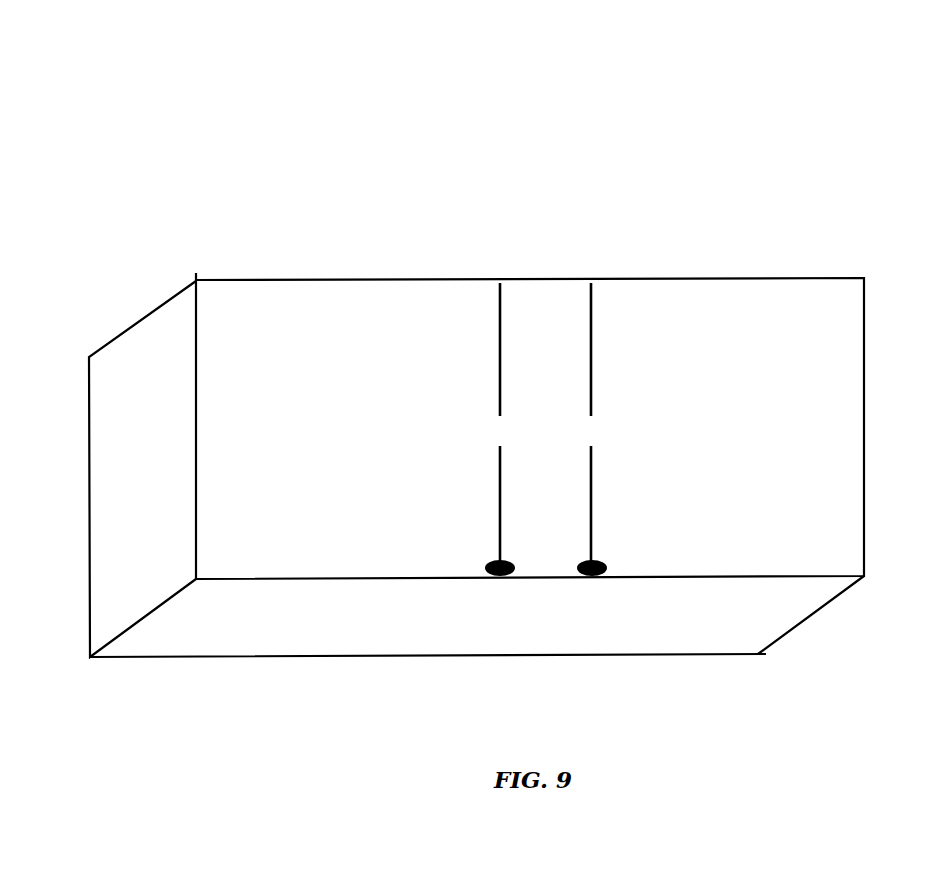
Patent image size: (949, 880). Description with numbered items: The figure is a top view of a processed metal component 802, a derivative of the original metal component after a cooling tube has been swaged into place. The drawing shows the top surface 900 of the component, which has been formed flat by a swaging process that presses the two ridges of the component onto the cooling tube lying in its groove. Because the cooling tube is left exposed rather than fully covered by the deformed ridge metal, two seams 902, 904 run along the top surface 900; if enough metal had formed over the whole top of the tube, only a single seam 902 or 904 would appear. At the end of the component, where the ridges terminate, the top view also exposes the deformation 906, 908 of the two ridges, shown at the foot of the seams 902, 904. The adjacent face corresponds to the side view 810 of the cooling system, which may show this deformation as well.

The processed metal component 802 is at (836, 103).
The top surface 900 is at (755, 436).
The side view 810 is at (603, 619).
The seam 902 is at (500, 424).
The seam 904 is at (591, 424).
The deformation 906 is at (497, 559).
The deformation 908 is at (602, 561).